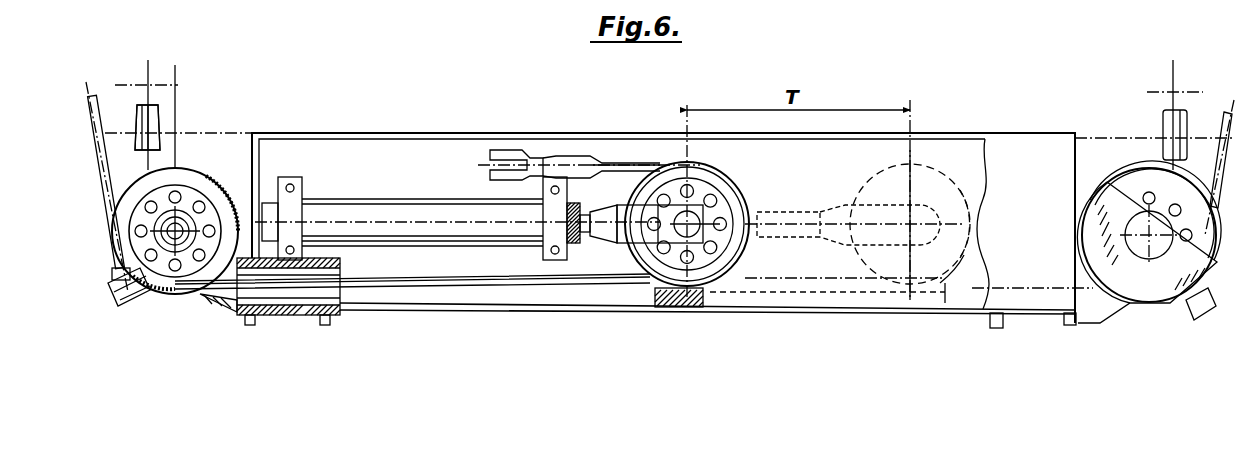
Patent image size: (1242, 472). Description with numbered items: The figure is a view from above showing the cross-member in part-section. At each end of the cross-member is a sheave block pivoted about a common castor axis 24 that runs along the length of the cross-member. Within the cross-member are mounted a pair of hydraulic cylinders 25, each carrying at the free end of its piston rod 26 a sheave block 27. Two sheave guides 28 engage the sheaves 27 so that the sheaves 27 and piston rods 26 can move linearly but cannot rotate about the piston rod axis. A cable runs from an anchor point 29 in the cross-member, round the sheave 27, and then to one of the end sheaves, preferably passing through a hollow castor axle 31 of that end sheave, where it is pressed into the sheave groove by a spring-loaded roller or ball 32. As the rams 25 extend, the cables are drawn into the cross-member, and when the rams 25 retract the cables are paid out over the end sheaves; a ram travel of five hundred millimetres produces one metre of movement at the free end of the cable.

The castor axis 24 is at (1048, 296).
The hydraulic cylinder 25 is at (418, 196).
The piston rod 26 is at (795, 242).
The sheave block 27 is at (669, 162).
The sheave guide 28 is at (848, 304).
The anchor point 29 is at (508, 150).
The hollow castor axle 31 is at (240, 323).
The spring-loaded roller or ball 32 is at (116, 281).